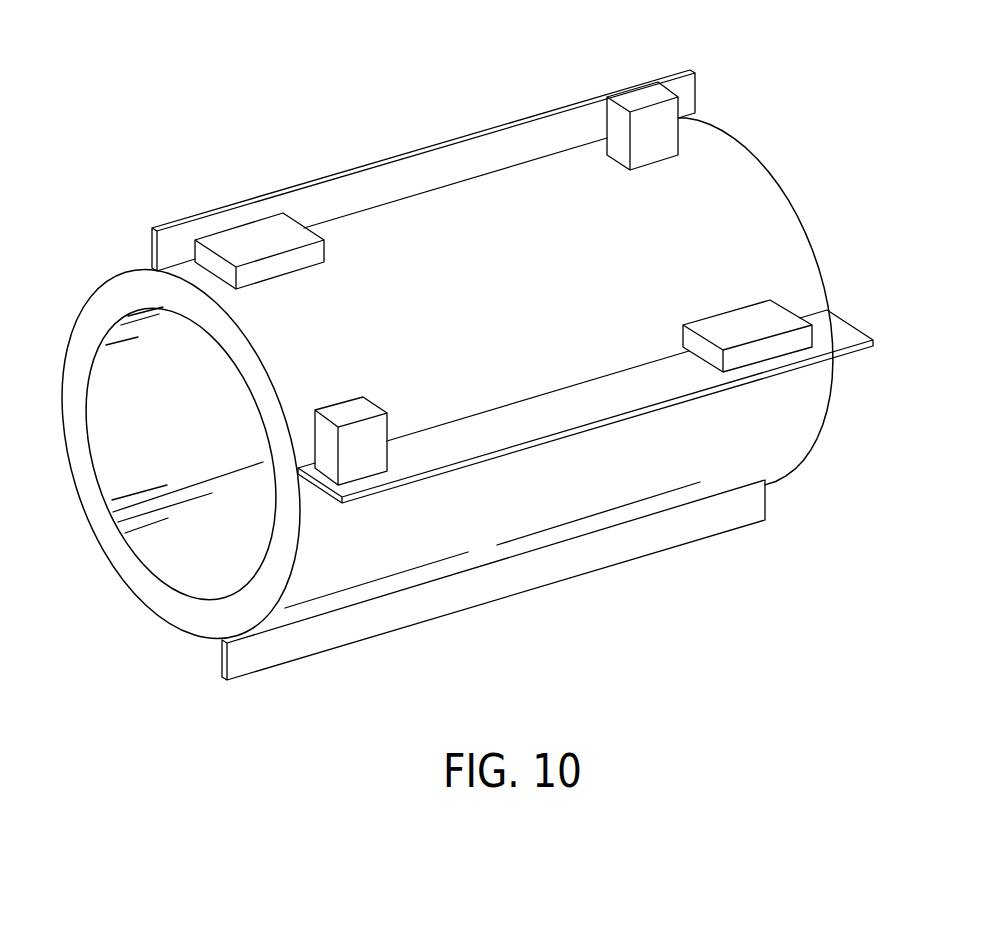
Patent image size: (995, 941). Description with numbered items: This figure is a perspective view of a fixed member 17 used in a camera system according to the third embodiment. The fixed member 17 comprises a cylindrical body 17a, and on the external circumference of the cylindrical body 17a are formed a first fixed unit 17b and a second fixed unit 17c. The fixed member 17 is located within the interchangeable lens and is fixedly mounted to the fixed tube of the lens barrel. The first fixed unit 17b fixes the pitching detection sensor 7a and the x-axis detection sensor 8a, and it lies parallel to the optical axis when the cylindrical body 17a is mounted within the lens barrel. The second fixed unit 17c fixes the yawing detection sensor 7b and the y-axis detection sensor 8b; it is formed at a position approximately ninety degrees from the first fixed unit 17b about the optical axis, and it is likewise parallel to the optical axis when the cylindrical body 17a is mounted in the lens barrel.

The pitching detection sensor 7a is at (250, 237).
The yawing detection sensor 7b is at (365, 458).
The x-axis detection sensor 8a is at (640, 98).
The y-axis detection sensor 8b is at (760, 347).
The fixed member 17 is at (446, 356).
The cylindrical body 17a is at (363, 570).
The first fixed unit 17b is at (409, 174).
The second fixed unit 17c is at (480, 585).